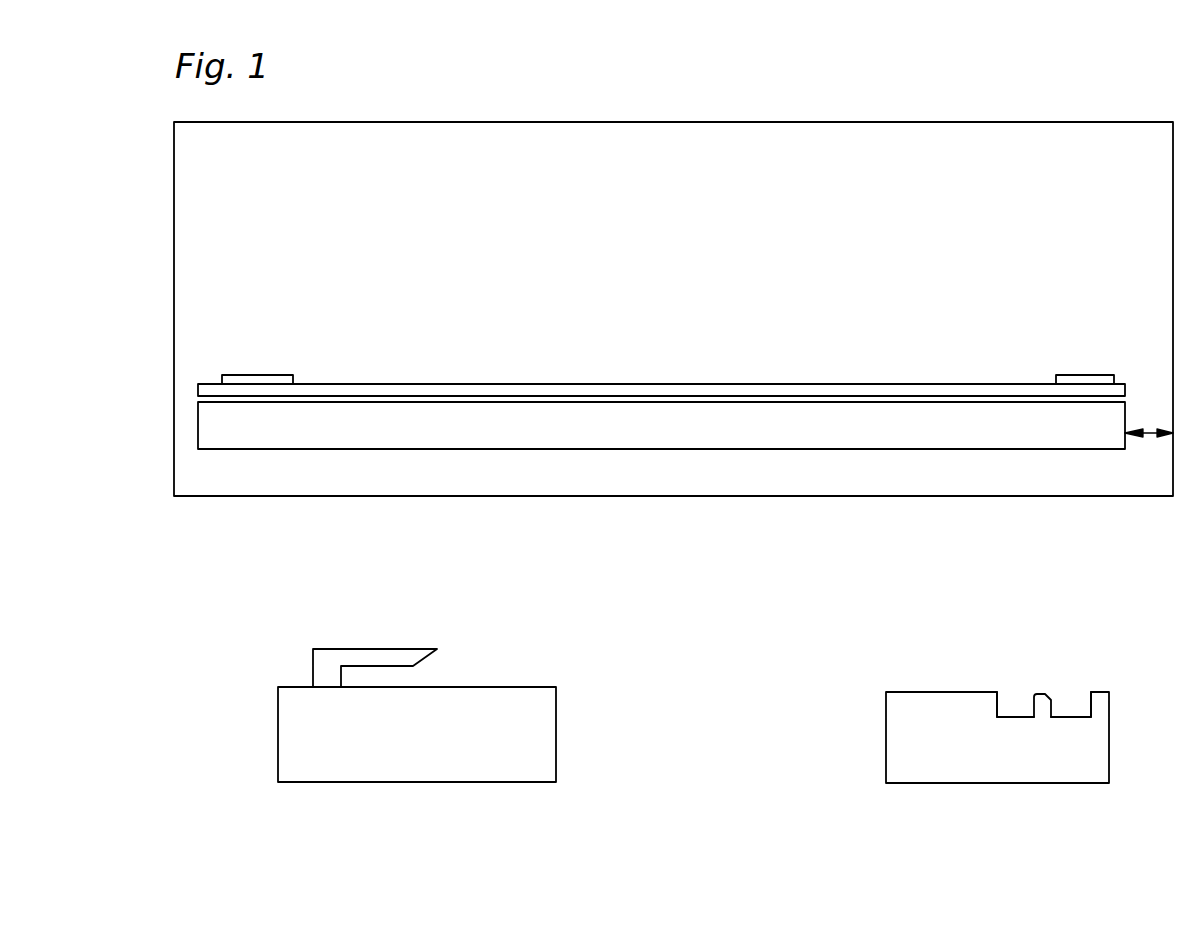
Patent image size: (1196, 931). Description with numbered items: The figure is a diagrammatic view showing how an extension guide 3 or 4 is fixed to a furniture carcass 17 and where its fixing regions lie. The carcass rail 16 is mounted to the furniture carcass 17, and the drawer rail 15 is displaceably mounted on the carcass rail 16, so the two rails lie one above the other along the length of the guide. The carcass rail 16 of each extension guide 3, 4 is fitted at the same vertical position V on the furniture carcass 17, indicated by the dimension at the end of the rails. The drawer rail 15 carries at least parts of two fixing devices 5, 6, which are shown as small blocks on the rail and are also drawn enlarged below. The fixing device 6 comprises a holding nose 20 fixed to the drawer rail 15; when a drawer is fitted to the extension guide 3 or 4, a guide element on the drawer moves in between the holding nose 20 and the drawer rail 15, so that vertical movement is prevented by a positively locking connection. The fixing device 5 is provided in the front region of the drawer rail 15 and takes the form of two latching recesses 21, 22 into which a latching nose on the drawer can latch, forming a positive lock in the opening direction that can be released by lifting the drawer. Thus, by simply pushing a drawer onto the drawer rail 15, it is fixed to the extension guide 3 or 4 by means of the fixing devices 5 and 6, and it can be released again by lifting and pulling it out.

The furniture carcass 17 is at (588, 215).
The extension guide 3 is at (661, 537).
The extension guide 4 is at (661, 537).
The drawer rail 15 is at (458, 393).
The carcass rail 16 is at (478, 433).
The fixing device 6 is at (242, 382).
The fixing device 5 is at (1073, 380).
The vertical position V is at (1150, 433).
The holding nose 20 is at (368, 659).
The latching recess 21 is at (1015, 713).
The latching recess 22 is at (1068, 713).